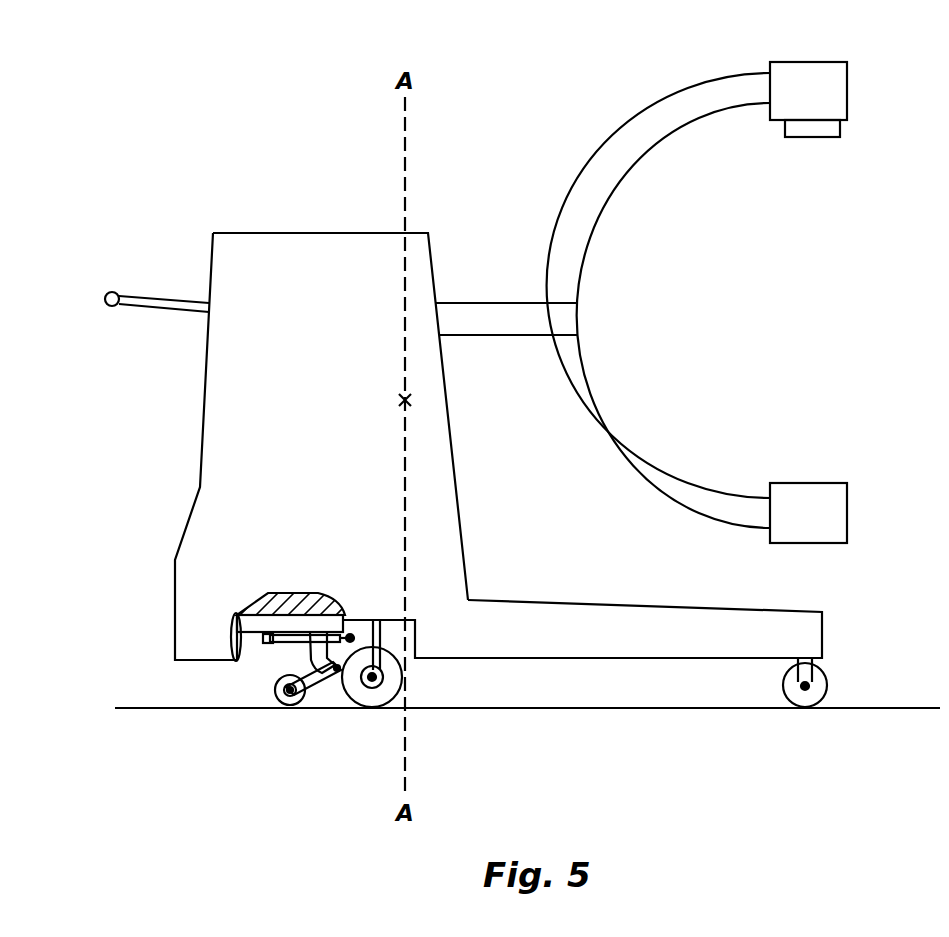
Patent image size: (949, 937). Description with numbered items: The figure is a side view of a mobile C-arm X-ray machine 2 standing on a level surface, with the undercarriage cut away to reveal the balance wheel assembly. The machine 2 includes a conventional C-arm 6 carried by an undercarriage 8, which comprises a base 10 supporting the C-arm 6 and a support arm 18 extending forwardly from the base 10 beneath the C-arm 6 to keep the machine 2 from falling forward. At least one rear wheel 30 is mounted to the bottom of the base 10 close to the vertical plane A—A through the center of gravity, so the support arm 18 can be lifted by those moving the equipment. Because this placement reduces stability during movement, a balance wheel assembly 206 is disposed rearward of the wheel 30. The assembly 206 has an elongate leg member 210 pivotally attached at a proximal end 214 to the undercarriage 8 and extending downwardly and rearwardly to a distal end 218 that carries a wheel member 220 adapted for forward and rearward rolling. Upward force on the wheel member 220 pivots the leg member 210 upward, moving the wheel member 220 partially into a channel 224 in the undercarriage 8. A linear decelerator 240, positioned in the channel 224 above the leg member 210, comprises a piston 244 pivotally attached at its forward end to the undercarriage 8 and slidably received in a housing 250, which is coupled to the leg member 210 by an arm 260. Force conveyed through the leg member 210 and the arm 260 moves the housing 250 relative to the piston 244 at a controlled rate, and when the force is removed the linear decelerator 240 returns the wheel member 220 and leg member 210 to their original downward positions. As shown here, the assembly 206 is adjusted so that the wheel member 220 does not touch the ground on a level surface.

The mobile C-arm X-ray machine 2 is at (552, 124).
The C-arm 6 is at (848, 92).
The undercarriage 8 is at (443, 530).
The base 10 is at (283, 392).
The support arm 18 is at (727, 644).
The rear wheel 30 is at (402, 677).
The balance wheel assembly 206 is at (242, 680).
The leg member 210 is at (313, 688).
The proximal end 214 is at (334, 698).
The distal end 218 is at (296, 706).
The wheel member 220 is at (277, 697).
The channel 224 is at (238, 615).
The linear decelerator 240 is at (288, 616).
The piston 244 is at (346, 616).
The housing 250 is at (247, 625).
The arm 260 is at (308, 660).